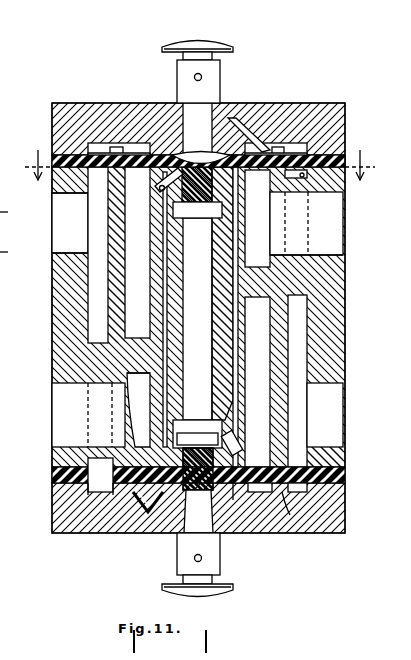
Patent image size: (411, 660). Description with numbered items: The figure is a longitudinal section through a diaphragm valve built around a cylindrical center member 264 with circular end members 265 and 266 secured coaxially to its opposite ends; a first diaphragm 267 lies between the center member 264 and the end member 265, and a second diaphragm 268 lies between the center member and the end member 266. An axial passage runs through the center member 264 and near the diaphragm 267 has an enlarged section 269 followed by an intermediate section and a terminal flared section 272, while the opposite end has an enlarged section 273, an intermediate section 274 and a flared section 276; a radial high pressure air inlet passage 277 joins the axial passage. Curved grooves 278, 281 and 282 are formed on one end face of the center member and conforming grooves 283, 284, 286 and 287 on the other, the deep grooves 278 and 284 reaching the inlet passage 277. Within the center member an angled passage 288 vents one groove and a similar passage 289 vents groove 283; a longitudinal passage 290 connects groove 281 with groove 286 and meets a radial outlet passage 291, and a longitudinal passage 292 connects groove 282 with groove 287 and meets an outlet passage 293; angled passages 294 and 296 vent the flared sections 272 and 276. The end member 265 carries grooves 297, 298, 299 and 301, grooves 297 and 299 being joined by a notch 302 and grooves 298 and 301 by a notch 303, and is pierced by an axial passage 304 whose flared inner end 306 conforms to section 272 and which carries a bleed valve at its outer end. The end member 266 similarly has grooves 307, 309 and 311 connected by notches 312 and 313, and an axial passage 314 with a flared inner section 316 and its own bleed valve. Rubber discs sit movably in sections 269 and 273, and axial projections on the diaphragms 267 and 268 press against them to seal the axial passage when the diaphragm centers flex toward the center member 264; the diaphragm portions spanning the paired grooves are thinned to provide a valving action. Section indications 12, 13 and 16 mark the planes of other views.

The end member 265 is at (95, 110).
The end member 266 is at (78, 533).
The center member 264 is at (52, 325).
The first diaphragm 267 is at (345, 160).
The groove 297 is at (127, 150).
The axial passage 304 is at (190, 110).
The notch 302 is at (114, 147).
The notch 303 is at (278, 147).
The groove 298 is at (270, 146).
The groove 301 is at (312, 143).
The groove 299 is at (96, 150).
The flared inner end 306 is at (150, 143).
The flared section 272 is at (204, 152).
The groove 281 is at (90, 190).
The angled passage 294 is at (70, 212).
The outlet passage 291 is at (84, 250).
The angled passage 288 is at (336, 212).
The enlarged section 269 is at (213, 190).
The groove 282 is at (324, 200).
The longitudinal passage 292 is at (308, 273).
The groove 278 is at (127, 276).
The high pressure air inlet passage 277 is at (208, 324).
The longitudinal passage 290 is at (90, 360).
The angled passage 289 is at (60, 383).
The groove 284 is at (300, 358).
The intermediate section 274 is at (133, 412).
The flared section 276 is at (135, 435).
The groove 283 is at (150, 445).
The enlarged section 273 is at (240, 430).
The outlet passage 293 is at (340, 432).
The angled passage 296 is at (240, 443).
The groove 287 is at (336, 452).
The groove 286 is at (88, 463).
The second diaphragm 268 is at (52, 478).
The groove 309 is at (88, 492).
The notch 312 is at (128, 500).
The flared inner section 316 is at (232, 490).
The groove 311 is at (296, 492).
The notch 313 is at (302, 509).
The groove 307 is at (135, 533).
The axial passage 314 is at (208, 533).
The section line 12 is at (200, 177).
The section line 13 is at (6, 202).
The section line 16 is at (6, 245).